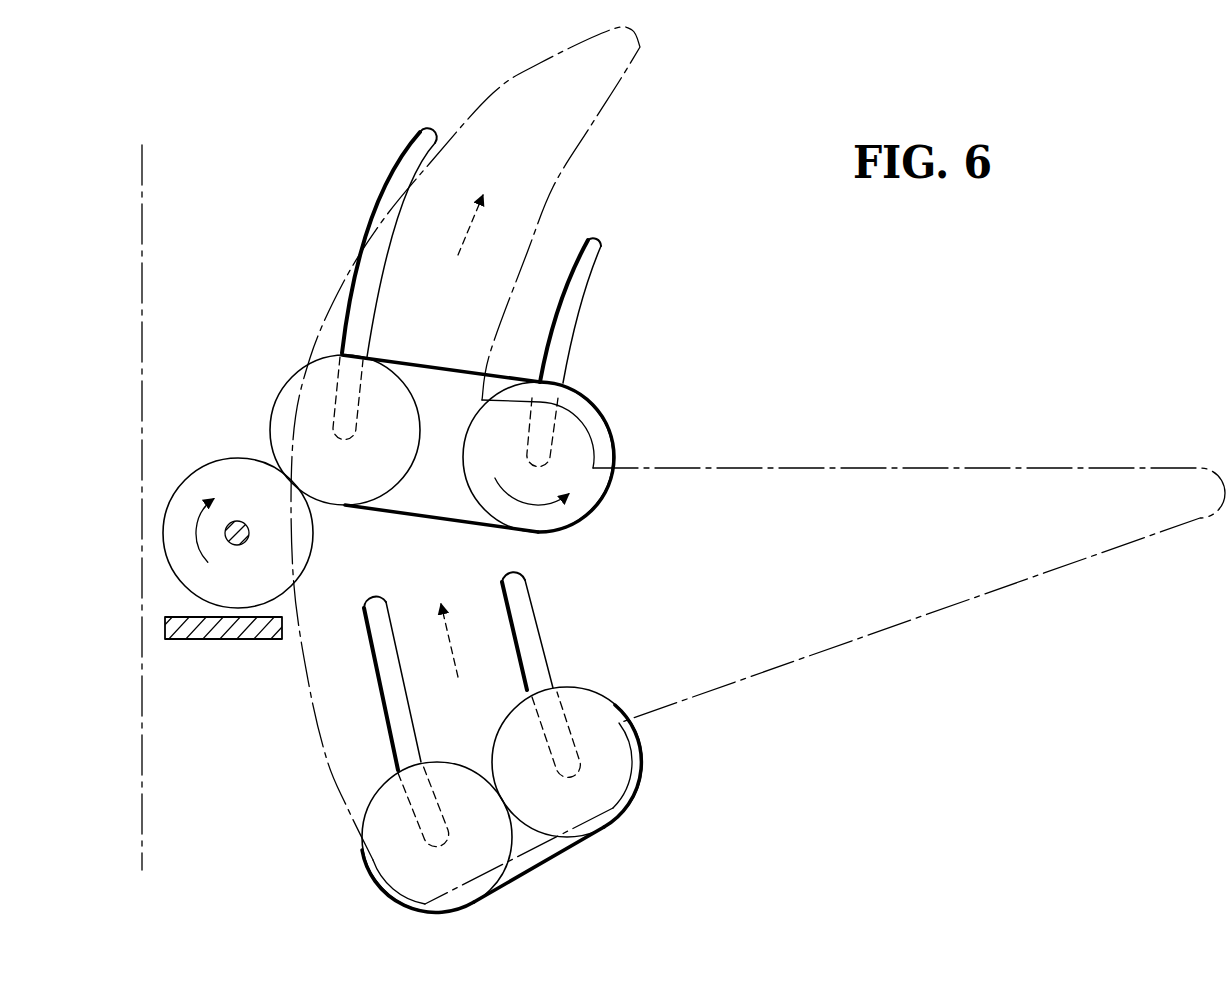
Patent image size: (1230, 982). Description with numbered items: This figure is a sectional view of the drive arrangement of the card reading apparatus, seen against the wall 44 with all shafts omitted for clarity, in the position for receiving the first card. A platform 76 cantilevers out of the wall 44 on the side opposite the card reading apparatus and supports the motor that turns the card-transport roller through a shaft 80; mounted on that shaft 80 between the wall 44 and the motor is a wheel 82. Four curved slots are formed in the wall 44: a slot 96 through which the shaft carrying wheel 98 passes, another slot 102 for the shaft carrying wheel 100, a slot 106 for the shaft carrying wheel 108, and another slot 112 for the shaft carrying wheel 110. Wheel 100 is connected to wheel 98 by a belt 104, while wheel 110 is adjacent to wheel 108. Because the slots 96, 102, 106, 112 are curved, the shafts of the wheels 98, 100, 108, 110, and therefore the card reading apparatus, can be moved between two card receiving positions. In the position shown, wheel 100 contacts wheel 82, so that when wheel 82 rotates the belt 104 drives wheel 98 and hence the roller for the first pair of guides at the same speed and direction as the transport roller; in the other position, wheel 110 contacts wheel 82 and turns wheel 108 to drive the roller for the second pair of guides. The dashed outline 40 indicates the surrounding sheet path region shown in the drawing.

The sheet path 40 is at (585, 133).
The wall 44 is at (160, 356).
The platform 76 is at (217, 638).
The shaft 80 is at (237, 546).
The wheel 82 is at (222, 472).
The slot 96 is at (605, 240).
The wheel 98 is at (598, 420).
The wheel 100 is at (289, 397).
The slot 102 is at (388, 168).
The belt 104 is at (452, 367).
The slot 106 is at (538, 618).
The wheel 108 is at (627, 813).
The wheel 110 is at (483, 888).
The slot 112 is at (372, 594).